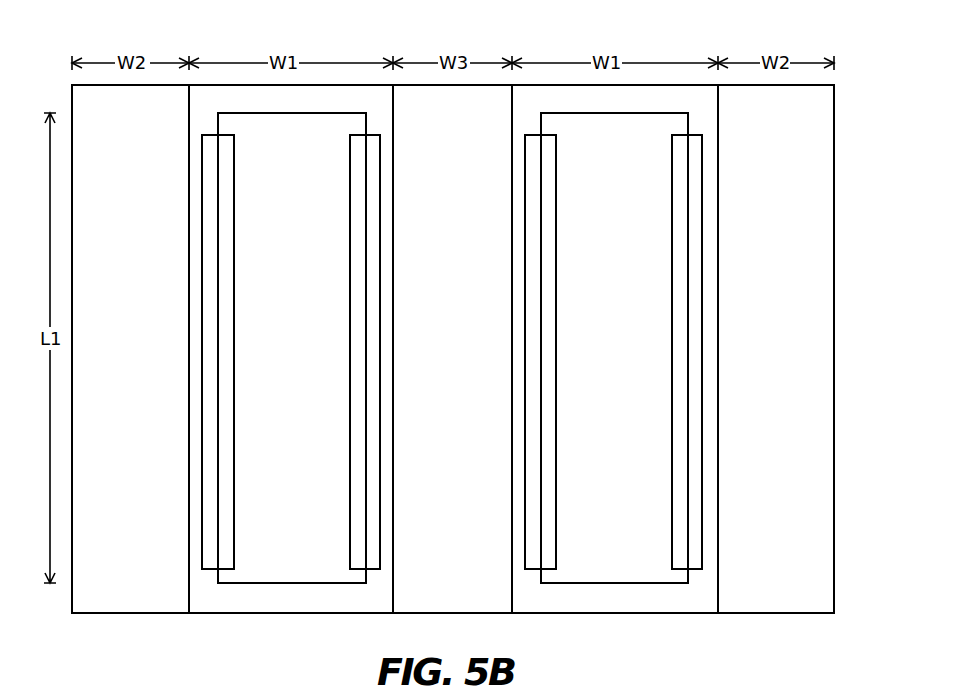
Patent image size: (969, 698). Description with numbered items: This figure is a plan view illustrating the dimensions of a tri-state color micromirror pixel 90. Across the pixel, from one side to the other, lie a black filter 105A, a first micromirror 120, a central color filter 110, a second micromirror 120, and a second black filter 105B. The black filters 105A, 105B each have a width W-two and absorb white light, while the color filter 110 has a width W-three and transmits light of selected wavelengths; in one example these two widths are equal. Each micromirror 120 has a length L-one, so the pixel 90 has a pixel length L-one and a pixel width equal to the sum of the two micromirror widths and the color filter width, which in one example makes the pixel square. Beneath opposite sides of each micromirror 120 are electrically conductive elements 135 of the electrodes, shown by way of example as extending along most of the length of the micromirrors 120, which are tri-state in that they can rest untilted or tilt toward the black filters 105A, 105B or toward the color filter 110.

The micromirror pixel 90 is at (869, 56).
The black filter 105A is at (137, 226).
The black filter 105B is at (797, 217).
The color filter 110 is at (460, 226).
The micromirror 120 is at (327, 159).
The electrically conductive element 135 is at (672, 465).